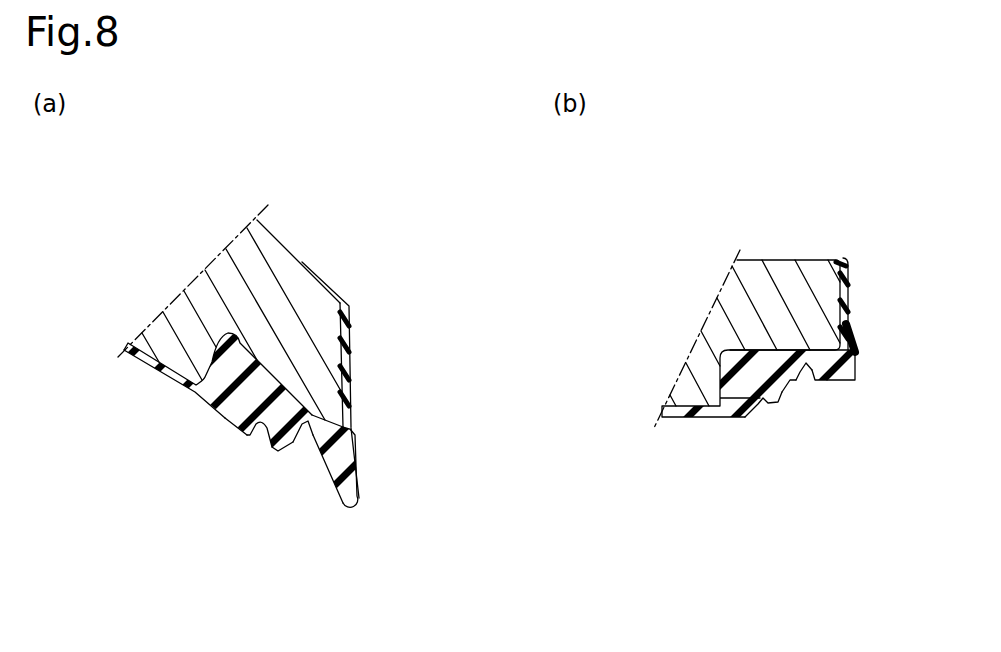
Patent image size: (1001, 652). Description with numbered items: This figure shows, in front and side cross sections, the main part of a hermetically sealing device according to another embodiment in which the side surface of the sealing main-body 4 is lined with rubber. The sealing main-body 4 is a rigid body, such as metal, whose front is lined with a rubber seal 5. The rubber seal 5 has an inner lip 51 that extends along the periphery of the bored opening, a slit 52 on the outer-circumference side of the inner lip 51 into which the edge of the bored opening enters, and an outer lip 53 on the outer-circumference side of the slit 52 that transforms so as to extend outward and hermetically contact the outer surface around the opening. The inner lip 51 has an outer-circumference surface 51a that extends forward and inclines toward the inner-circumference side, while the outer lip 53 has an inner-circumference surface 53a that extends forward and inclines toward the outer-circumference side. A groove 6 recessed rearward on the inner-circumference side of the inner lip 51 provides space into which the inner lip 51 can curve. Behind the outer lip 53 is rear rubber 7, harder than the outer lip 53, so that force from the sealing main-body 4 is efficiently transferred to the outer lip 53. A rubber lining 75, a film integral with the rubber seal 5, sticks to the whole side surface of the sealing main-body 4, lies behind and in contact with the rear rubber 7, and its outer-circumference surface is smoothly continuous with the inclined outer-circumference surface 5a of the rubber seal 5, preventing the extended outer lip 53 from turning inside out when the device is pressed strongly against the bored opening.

The sealing main-body 4 is at (276, 250).
The rubber lining 75 is at (349, 351).
The rear rubber 7 is at (357, 449).
The rubber seal 5 is at (200, 397).
The outer-circumference surface 5a is at (352, 430).
The groove 6 is at (245, 448).
The inner lip 51 is at (277, 449).
The outer-circumference surface 51a is at (300, 450).
The slit 52 is at (310, 452).
The outer lip 53 is at (357, 488).
The inner-circumference surface 53a is at (318, 455).